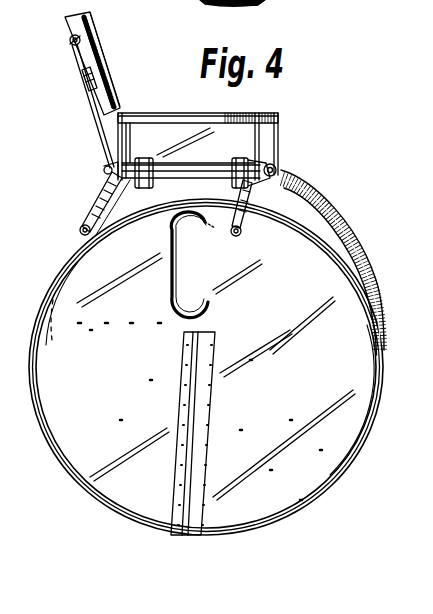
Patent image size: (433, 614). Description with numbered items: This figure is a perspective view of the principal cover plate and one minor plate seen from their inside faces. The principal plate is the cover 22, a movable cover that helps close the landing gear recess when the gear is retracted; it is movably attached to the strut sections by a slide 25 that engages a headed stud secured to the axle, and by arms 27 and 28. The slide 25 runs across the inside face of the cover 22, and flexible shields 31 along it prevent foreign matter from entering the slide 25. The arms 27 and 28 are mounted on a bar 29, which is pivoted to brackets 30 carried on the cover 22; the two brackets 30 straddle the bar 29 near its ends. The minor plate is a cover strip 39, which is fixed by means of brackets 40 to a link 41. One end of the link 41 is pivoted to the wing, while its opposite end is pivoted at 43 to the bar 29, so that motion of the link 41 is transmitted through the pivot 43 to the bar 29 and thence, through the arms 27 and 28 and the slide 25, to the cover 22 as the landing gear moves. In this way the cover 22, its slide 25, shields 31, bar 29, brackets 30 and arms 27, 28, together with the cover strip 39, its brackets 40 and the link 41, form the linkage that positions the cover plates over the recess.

The cover 22 is at (332, 232).
The slide 25 is at (205, 331).
The arm 27 is at (243, 232).
The arm 28 is at (100, 200).
The bar 29 is at (173, 166).
The bracket 30 is at (150, 162).
The flexible shield 31 is at (174, 478).
The cover strip 39 is at (93, 24).
The bracket 40 is at (84, 88).
The link 41 is at (100, 125).
The pivot 43 is at (104, 168).